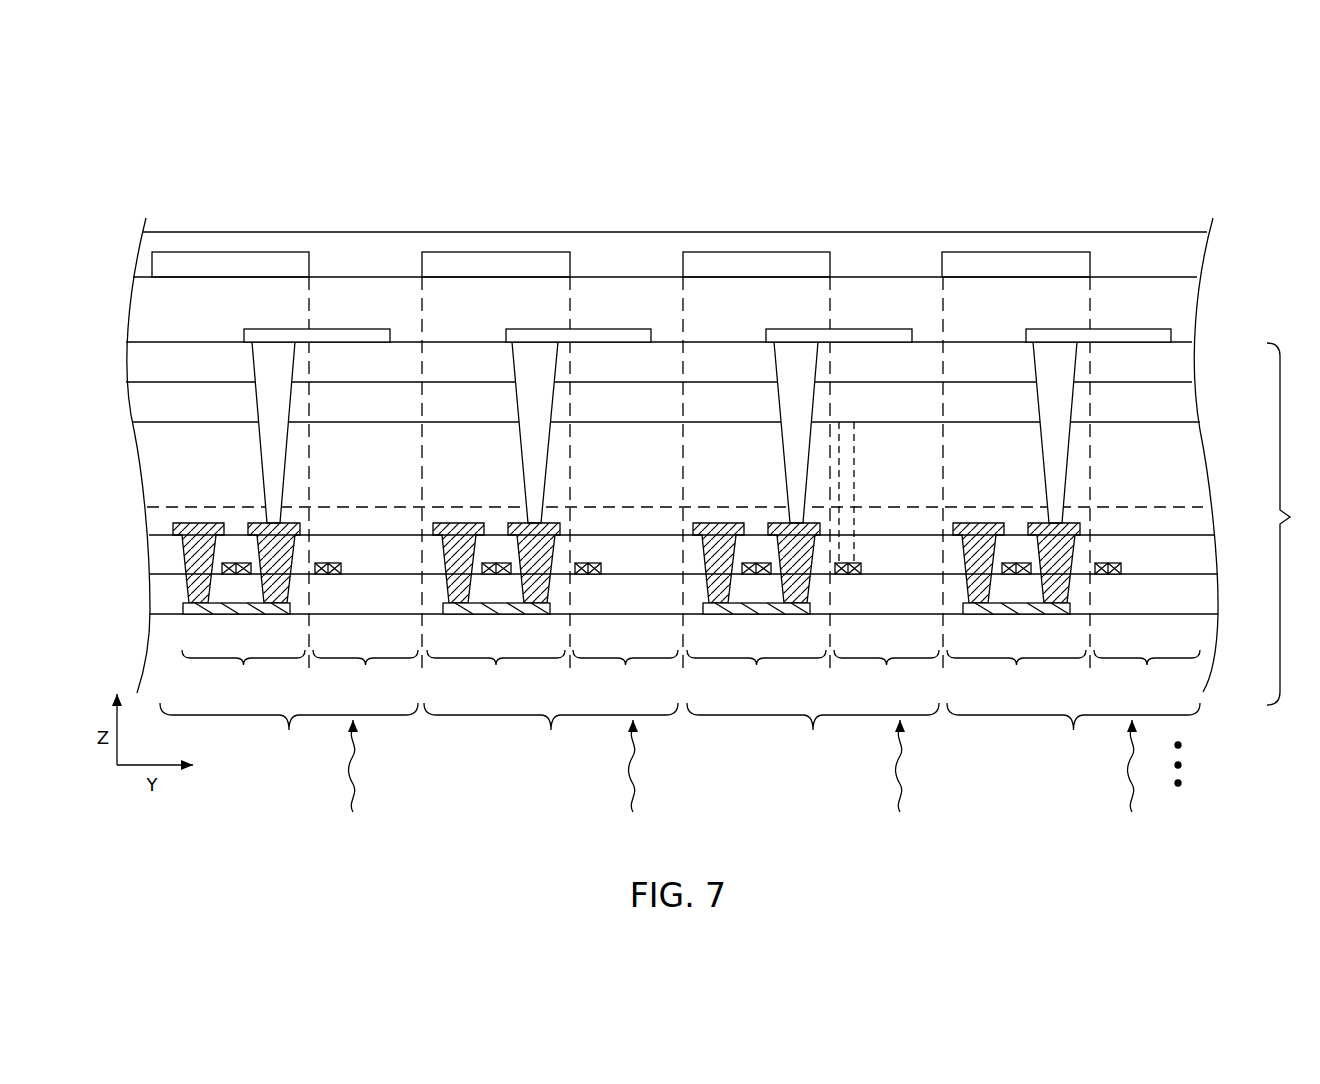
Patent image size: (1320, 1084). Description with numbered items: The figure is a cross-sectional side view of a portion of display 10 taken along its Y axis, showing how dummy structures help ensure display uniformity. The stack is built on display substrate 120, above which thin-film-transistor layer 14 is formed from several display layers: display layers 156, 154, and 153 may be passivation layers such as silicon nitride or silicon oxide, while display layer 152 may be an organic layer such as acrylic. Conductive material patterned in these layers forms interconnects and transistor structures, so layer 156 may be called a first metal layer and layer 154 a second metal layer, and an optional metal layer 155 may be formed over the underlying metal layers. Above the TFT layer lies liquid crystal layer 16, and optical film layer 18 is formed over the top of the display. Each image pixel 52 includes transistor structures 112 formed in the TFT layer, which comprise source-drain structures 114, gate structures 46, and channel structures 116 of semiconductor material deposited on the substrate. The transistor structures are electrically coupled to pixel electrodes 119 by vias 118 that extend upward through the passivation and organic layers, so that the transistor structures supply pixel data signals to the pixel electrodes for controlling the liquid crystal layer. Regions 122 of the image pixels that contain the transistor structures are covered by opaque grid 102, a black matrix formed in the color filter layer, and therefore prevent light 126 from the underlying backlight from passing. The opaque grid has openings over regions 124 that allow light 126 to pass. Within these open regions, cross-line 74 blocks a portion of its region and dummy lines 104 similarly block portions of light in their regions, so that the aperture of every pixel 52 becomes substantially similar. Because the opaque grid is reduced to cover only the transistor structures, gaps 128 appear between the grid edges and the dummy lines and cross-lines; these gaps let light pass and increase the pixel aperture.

The display 10 is at (1181, 146).
The thin-film-transistor layer 14 is at (1291, 524).
The liquid crystal layer 16 is at (1193, 308).
The optical film layer 18 is at (1203, 252).
The gate structure 46 is at (237, 574).
The image pixel 52 is at (680, 729).
The cross-line 74 is at (863, 567).
The opaque grid 102 is at (443, 252).
The dummy line 104 is at (327, 563).
The transistor structure 112 is at (190, 484).
The source-drain structure 114 is at (257, 523).
The channel structure 116 is at (237, 614).
The via 118 is at (259, 442).
The pixel electrode 119 is at (273, 329).
The display substrate 120 is at (1210, 660).
The region 122 is at (634, 670).
The region 124 is at (756, 670).
The light 126 is at (356, 792).
The gap 128 is at (316, 581).
The display layer 152 is at (1197, 450).
The display layer 153 is at (1185, 362).
The display layer 154 is at (1207, 553).
The metal layer 155 is at (148, 517).
The display layer 156 is at (1202, 595).